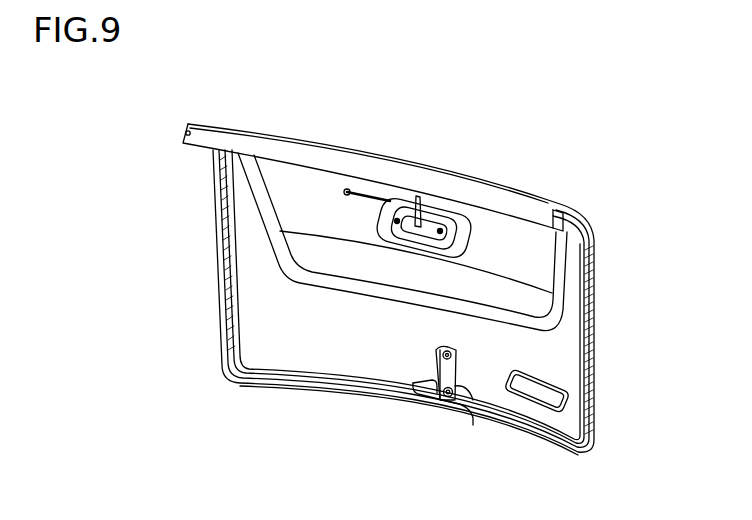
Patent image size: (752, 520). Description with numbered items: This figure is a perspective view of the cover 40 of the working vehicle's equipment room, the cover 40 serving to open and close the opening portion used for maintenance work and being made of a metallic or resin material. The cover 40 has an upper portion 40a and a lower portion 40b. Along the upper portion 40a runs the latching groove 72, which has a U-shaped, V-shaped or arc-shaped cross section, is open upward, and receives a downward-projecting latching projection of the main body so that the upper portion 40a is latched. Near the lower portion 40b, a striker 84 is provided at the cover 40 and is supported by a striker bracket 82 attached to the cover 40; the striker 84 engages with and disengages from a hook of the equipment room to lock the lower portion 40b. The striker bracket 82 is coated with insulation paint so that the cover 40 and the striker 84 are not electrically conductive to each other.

The cover 40 is at (556, 160).
The upper portion of the cover 40a is at (403, 152).
The lower portion of the cover 40b is at (370, 404).
The latching groove 72 is at (303, 160).
The striker bracket 82 is at (468, 405).
The striker 84 is at (410, 404).